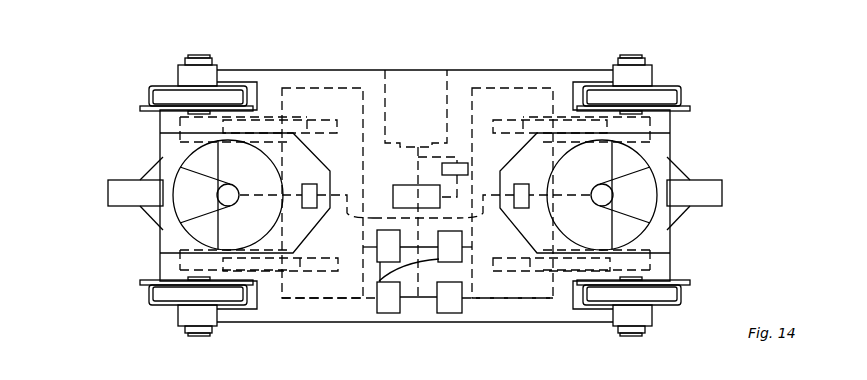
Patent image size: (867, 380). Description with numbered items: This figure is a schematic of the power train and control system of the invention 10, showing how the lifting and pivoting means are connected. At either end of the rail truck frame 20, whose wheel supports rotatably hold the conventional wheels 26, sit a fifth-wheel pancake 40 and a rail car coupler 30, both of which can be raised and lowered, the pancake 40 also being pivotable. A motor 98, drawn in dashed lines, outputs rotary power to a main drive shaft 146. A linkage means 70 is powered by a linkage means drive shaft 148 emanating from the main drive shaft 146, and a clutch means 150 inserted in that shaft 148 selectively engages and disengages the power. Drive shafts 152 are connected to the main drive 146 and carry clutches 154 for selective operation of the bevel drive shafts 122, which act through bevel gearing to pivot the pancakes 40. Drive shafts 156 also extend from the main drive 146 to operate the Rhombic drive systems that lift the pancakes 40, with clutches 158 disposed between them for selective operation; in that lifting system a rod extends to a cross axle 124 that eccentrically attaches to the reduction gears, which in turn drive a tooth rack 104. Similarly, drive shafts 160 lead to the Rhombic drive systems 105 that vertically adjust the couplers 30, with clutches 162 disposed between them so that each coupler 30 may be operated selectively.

The invention 10 is at (509, 27).
The rail truck frame 20 is at (492, 68).
The wheels 26 is at (162, 84).
The coupler 30 is at (119, 200).
The fifth-wheel pancake 40 is at (196, 157).
The linkage means 70 is at (407, 188).
The motor 98 is at (383, 70).
The tooth rack 104 is at (333, 118).
The Rhombic drive systems 105 is at (180, 120).
The power shaft 122 is at (270, 200).
The cross axle 124 is at (288, 160).
The main drive shaft 146 is at (420, 288).
The linkage means drive shaft 148 is at (462, 168).
The clutch means 150 is at (472, 160).
The drive shafts 152 is at (485, 218).
The clutches 154 is at (310, 208).
The drive shafts 156 is at (360, 300).
The clutch 158 is at (380, 313).
The drive shafts 160 is at (297, 88).
The clutches 162 is at (462, 316).